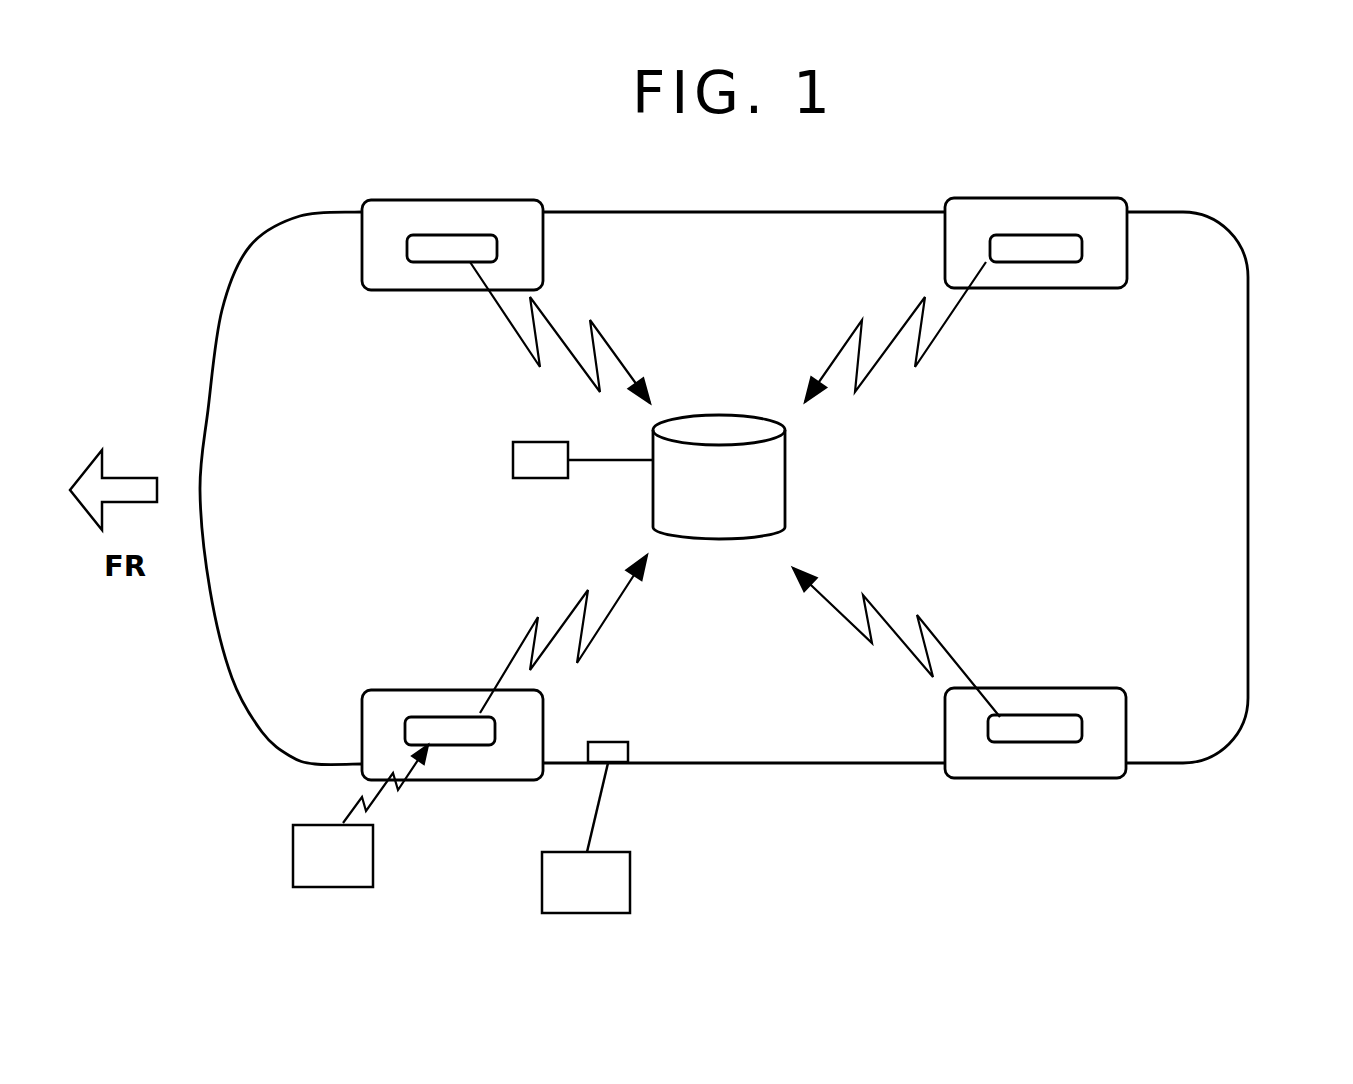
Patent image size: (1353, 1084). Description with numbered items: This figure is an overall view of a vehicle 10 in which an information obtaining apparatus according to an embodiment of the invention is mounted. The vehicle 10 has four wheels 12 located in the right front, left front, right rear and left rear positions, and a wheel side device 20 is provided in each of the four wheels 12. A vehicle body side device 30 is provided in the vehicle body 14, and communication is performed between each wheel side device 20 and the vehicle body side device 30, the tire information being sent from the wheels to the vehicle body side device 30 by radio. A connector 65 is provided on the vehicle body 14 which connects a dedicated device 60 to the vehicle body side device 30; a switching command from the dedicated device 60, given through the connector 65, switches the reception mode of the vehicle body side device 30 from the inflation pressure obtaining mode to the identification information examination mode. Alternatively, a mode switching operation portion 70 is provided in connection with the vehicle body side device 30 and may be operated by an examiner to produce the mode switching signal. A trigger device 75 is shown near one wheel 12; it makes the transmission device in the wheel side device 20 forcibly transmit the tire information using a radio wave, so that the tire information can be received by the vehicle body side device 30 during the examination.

The vehicle 10 is at (735, 835).
The wheel 12 is at (362, 247).
The vehicle body 14 is at (1247, 522).
The wheel side device 20 is at (451, 263).
The vehicle body side device 30 is at (785, 484).
The dedicated device 60 is at (630, 880).
The connector 65 is at (628, 752).
The mode switching operation portion 70 is at (527, 480).
The trigger device 75 is at (373, 855).